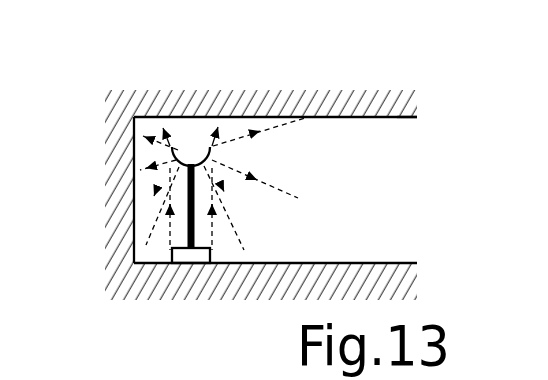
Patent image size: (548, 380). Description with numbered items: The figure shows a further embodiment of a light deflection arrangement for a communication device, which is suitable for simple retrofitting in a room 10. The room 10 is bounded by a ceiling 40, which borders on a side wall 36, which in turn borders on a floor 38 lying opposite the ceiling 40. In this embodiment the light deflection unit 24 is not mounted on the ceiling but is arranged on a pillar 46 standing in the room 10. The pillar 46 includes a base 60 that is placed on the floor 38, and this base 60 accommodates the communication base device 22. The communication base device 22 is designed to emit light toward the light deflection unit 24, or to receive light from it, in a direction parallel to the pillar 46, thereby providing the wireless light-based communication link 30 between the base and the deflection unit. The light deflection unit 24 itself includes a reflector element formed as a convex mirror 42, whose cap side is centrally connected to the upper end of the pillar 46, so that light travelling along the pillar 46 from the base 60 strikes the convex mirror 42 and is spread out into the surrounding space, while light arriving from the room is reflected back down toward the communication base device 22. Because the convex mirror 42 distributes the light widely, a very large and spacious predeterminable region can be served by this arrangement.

The room 10 is at (368, 86).
The communication base device 22 is at (175, 157).
The light deflection unit 24 is at (275, 107).
The wireless light-based communication link 30 is at (197, 233).
The side wall 36 is at (123, 247).
The floor 38 is at (400, 262).
The ceiling 40 is at (400, 117).
The convex mirror 42 is at (207, 158).
The pillar 46 is at (183, 168).
The base 60 is at (188, 264).